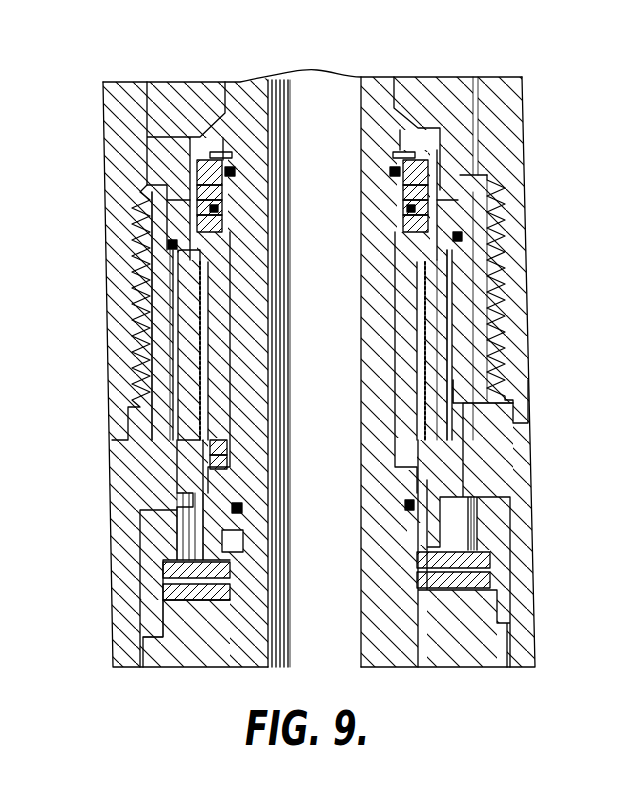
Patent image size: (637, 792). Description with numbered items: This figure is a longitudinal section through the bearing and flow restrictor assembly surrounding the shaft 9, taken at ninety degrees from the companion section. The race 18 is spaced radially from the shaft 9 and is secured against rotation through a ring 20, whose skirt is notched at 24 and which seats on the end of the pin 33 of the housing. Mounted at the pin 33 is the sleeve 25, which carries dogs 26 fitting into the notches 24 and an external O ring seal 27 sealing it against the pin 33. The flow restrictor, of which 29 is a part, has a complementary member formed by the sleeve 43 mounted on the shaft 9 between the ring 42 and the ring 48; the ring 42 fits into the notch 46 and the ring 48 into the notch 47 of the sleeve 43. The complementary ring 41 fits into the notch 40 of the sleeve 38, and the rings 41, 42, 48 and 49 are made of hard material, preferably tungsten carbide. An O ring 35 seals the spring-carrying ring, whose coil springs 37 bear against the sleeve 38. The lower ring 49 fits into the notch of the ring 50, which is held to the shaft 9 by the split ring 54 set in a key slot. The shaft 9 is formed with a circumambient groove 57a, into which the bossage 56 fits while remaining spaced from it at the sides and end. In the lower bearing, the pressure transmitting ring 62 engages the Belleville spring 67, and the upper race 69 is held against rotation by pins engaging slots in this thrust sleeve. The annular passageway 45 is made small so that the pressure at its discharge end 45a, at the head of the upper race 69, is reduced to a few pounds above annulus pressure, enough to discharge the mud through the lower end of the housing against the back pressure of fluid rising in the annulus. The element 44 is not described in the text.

The shaft 9 is at (290, 270).
The race 18 is at (425, 80).
The ring 20 is at (480, 160).
The notch 24 is at (470, 185).
The sleeve 25 is at (460, 325).
The dog 26 is at (470, 210).
The O ring seal 27 is at (170, 244).
The flow restrictor part 29 is at (450, 300).
The pin 33 is at (145, 305).
The O ring 35 is at (210, 180).
The coil spring 37 is at (205, 190).
The sleeve 38 is at (420, 195).
The notch 40 is at (215, 208).
The complementary ring 41 is at (420, 215).
The ring 42 is at (420, 235).
The sleeve 43 is at (490, 240).
The shoulder 44 is at (440, 403).
The annular passageway 45 is at (440, 378).
The discharge end 45a is at (185, 540).
The notch 46 is at (215, 240).
The notch 47 is at (225, 445).
The ring 48 is at (225, 462).
The lower ring 49 is at (420, 465).
The ring 50 is at (240, 492).
The split ring 54 is at (243, 540).
The bossage 56 is at (420, 335).
The circumambient groove 57a is at (230, 320).
The pressure transmitting ring 62 is at (480, 572).
The Belleville spring 67 is at (175, 592).
The upper race 69 is at (185, 660).